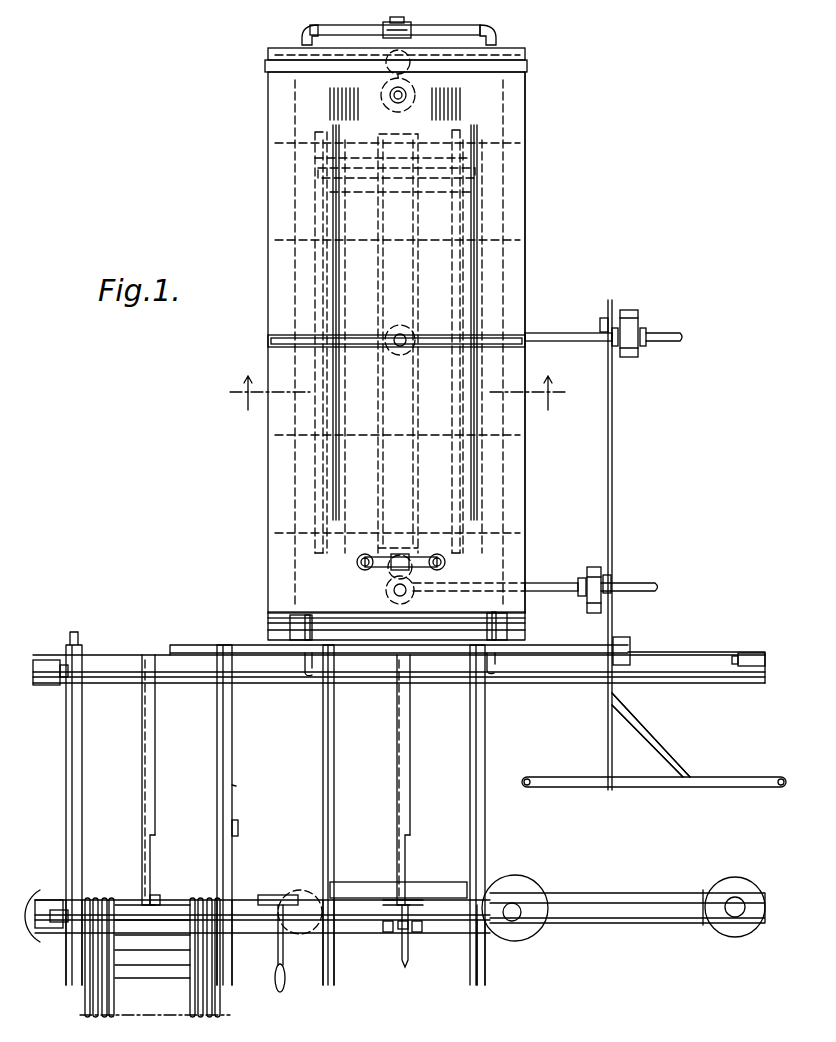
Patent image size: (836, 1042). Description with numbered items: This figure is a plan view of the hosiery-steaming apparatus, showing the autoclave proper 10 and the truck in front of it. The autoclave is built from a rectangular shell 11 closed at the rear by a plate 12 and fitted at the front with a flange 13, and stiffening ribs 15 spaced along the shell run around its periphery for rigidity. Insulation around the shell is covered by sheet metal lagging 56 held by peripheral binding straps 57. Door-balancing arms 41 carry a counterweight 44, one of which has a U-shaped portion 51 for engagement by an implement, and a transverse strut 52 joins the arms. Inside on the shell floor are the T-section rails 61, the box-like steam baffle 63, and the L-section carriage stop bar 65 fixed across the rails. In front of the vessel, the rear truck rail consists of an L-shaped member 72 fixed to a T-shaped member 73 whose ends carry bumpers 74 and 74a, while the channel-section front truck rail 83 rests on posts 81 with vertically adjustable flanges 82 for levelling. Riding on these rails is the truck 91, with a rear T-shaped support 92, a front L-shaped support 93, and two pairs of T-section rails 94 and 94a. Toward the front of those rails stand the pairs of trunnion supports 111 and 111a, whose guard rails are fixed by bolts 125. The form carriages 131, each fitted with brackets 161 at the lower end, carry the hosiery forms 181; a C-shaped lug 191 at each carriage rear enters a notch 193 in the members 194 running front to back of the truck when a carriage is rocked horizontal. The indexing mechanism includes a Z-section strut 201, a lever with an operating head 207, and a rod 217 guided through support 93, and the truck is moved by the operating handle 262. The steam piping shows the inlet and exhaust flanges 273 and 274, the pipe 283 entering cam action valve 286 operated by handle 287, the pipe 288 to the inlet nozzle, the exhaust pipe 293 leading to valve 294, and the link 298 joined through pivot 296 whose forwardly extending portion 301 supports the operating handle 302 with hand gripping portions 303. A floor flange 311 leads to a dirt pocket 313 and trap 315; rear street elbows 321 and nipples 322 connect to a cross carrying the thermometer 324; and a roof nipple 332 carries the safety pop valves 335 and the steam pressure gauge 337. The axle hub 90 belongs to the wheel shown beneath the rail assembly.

The autoclave proper 10 is at (540, 265).
The shell 11 is at (505, 122).
The plate 12 is at (512, 46).
The flange 13 is at (275, 632).
The stiffening ribs 15 is at (535, 552).
The arms 41 is at (305, 666).
The counterweight 44 is at (300, 613).
The U-shaped portion 51 is at (492, 612).
The transverse strut 52 is at (312, 624).
The sheet metal lagging 56 is at (527, 78).
The peripheral binding straps 57 is at (266, 66).
The rails 61 is at (318, 522).
The steam baffle 63 is at (418, 286).
The carriage stop bar 65 is at (486, 172).
The L-shaped member 72 is at (576, 668).
The T-shaped member 73 is at (681, 652).
The bumper 74 is at (55, 653).
The bumper 74a is at (747, 653).
The posts 81 is at (524, 916).
The vertically adjustable flange 82 is at (46, 942).
The front truck rail 83 is at (44, 900).
The axle hub 90 is at (740, 896).
The truck 91 is at (310, 792).
The rear transverse T-shaped support 92 is at (168, 668).
The front L-shaped transverse support 93 is at (455, 884).
The rails 94 is at (66, 750).
The rails 94a is at (334, 740).
The trunnion supports 111 is at (66, 830).
The trunnion supports 111a is at (323, 846).
The bolts 125 is at (238, 826).
The form carriages 131 is at (326, 110).
The brackets 161 is at (362, 438).
The hosiery form 181 is at (83, 1010).
The lug 191 is at (158, 896).
The notch 193 is at (155, 838).
The members 194 is at (155, 718).
The horizontal strut 201 is at (363, 935).
The operating head 207 is at (405, 964).
The rod 217 is at (408, 904).
The operating handle 262 is at (290, 972).
The flange 273 is at (394, 332).
The flange 274 is at (394, 591).
The pipe 283 is at (662, 342).
The cam action valve 286 is at (640, 312).
The handle 287 is at (613, 318).
The pipe 288 is at (556, 333).
The pipe 293 is at (550, 592).
The valve 294 is at (587, 559).
The pivot 296 is at (612, 574).
The link 298 is at (612, 466).
The forwardly extending portion 301 is at (607, 721).
The operating handle 302 is at (657, 789).
The hand gripping portions 303 is at (530, 788).
The flange 311 is at (388, 104).
The dirt pocket 313 is at (404, 106).
The trap 315 is at (430, 72).
The street elbows 321 is at (300, 40).
The nipples 322 is at (330, 26).
The thermometer 324 is at (388, 38).
The nipple 332 is at (412, 582).
The safety pop valve 335 is at (357, 562).
The steam pressure gauge 337 is at (403, 556).